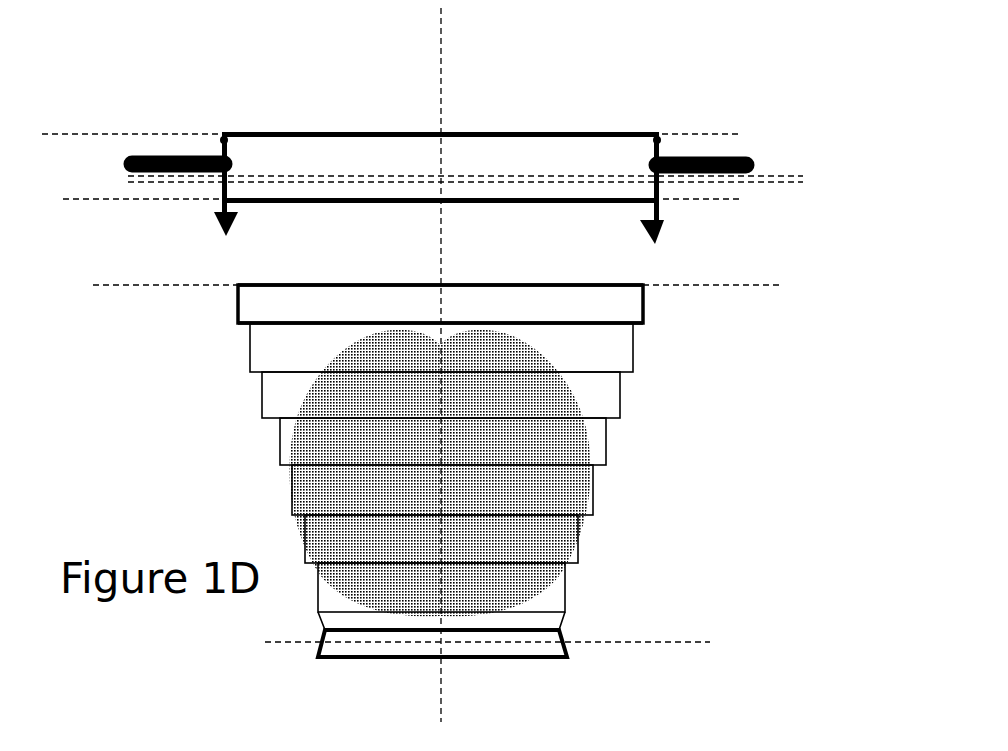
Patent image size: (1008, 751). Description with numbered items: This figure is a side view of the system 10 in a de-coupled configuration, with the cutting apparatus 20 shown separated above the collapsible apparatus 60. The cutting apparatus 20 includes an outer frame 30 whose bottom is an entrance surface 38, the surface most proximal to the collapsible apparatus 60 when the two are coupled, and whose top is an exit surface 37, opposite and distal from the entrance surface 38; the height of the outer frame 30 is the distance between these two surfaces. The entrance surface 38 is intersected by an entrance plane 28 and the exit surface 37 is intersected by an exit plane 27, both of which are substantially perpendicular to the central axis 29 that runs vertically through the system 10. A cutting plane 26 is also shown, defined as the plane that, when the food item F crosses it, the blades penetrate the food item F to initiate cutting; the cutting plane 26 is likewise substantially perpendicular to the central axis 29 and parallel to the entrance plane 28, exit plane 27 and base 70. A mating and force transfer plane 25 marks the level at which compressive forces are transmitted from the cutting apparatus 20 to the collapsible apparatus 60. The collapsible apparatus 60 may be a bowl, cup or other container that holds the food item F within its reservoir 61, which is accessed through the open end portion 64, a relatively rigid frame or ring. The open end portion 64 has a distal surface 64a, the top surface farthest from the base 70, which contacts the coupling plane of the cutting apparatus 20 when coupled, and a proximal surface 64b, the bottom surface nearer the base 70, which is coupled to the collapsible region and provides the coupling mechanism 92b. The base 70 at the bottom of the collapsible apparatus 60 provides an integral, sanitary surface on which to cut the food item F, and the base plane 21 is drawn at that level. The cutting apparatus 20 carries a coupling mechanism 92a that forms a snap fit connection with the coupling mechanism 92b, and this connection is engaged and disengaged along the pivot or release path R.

The system 10 is at (137, 60).
The cutting apparatus 20 is at (604, 131).
The base plane 21 is at (278, 646).
The mating and force transfer plane 25 is at (145, 184).
The cutting plane 26 is at (768, 177).
The exit plane 27 is at (66, 131).
The entrance plane 28 is at (60, 197).
The central axis 29 is at (443, 683).
The outer frame 30 is at (302, 158).
The exit surface 37 is at (366, 131).
The entrance surface 38 is at (343, 204).
The collapsible apparatus 60 is at (252, 357).
The reservoir 61 is at (274, 255).
The open end portion 64 is at (632, 305).
The distal surface 64a is at (500, 283).
The proximal surface 64b is at (541, 328).
The base 70 is at (565, 650).
The coupling mechanism 92a is at (663, 232).
The coupling mechanism 92b is at (640, 329).
The food item F is at (521, 511).
The pivot path R is at (204, 218).